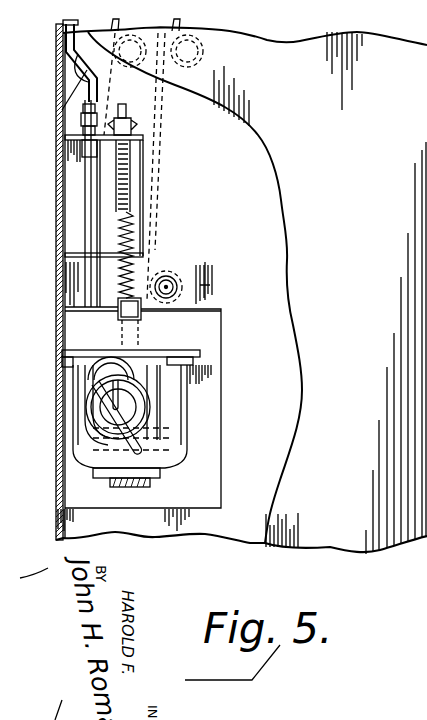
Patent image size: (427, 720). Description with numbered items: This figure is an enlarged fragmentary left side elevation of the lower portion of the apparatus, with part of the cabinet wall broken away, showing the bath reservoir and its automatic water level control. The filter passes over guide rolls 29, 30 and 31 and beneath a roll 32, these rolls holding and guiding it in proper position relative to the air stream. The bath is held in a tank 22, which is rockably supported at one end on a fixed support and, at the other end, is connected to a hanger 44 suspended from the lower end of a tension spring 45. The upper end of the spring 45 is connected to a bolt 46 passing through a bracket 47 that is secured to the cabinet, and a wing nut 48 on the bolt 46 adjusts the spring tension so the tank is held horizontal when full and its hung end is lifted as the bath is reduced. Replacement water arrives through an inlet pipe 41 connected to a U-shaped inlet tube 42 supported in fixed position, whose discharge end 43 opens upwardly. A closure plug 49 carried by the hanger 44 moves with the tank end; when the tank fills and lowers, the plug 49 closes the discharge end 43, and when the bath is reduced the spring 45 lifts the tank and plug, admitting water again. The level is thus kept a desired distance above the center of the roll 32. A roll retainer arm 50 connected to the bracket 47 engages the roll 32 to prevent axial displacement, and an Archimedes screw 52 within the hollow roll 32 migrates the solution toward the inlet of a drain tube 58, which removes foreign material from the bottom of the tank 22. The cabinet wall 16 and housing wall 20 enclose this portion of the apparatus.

The casting body 16 is at (241, 290).
The housing wall 20 is at (155, 187).
The tank 22 is at (190, 473).
The guide roll 29 is at (57, 61).
The guide roll 30 is at (193, 270).
The guide roll 31 is at (205, 57).
The roll 32 is at (170, 430).
The inlet pipe 41 is at (83, 70).
The U-shaped inlet tube 42 is at (90, 203).
The discharge end 43 is at (150, 334).
The hanger 44 is at (200, 353).
The tension spring 45 is at (130, 280).
The bolt 46 is at (130, 168).
The bracket 47 is at (135, 138).
The wing nut 48 is at (132, 122).
The closure plug 49 is at (200, 284).
The roll retainer arm 50 is at (135, 407).
The Archimedes screw 52 is at (150, 421).
The drain tube 58 is at (62, 120).